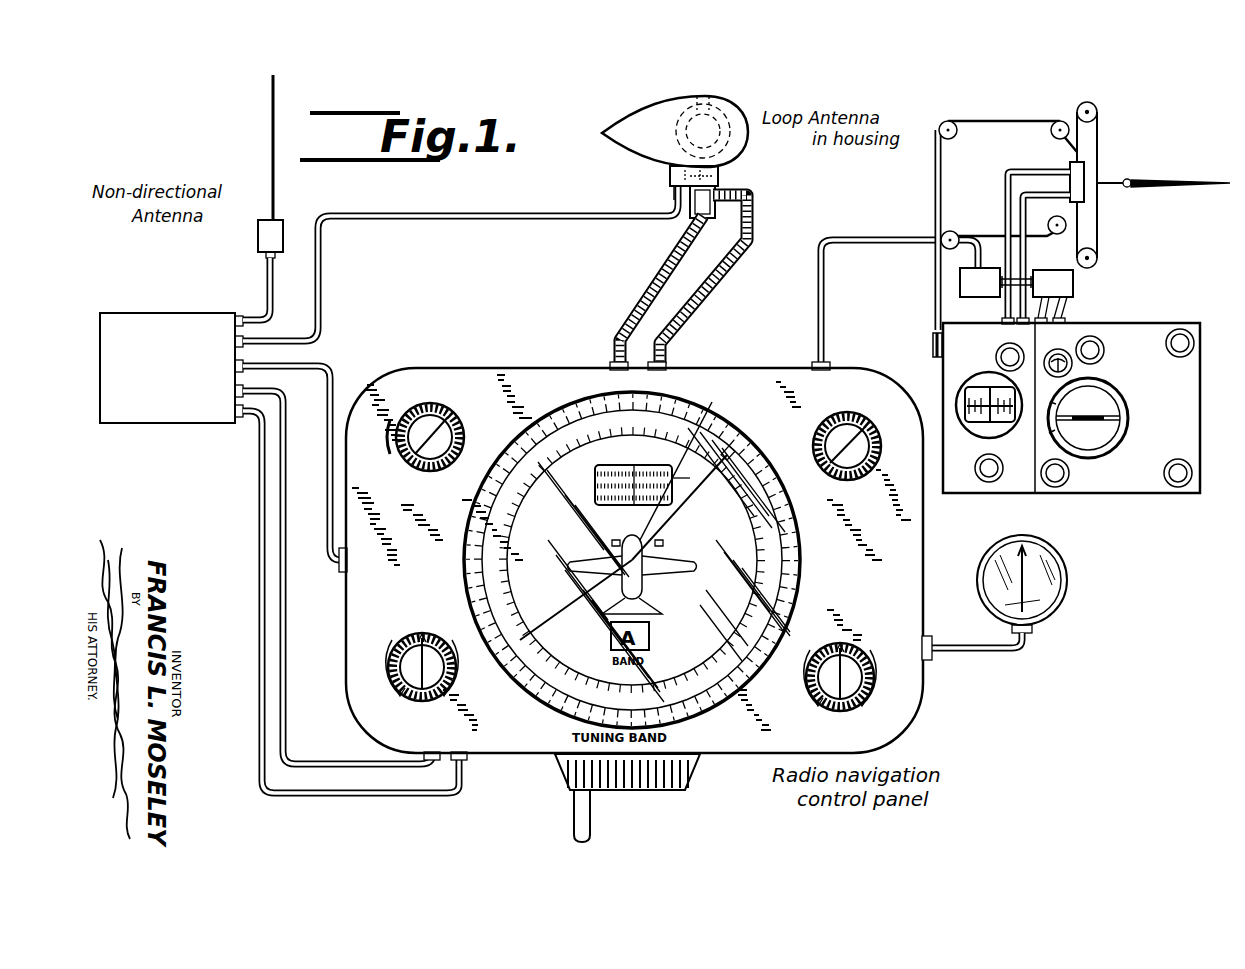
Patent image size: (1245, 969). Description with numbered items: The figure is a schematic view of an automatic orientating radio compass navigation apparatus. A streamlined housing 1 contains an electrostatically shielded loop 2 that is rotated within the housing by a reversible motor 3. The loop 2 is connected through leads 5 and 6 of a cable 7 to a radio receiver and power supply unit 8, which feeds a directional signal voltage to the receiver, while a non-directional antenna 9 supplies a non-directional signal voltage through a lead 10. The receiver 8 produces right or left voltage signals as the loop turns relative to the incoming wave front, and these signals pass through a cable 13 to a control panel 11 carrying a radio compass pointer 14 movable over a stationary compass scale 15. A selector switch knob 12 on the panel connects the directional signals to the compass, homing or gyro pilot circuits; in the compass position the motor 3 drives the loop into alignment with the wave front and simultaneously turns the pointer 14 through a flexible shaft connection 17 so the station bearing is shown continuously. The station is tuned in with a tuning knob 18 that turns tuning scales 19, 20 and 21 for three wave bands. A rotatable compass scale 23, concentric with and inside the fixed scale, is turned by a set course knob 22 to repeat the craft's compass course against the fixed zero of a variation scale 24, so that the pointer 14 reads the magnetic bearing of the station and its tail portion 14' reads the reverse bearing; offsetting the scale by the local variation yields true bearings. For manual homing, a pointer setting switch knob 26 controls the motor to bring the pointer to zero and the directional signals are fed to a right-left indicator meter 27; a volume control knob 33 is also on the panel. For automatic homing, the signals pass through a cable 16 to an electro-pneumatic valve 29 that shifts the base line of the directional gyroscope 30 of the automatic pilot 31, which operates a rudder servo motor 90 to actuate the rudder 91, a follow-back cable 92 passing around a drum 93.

The streamlined housing 1 is at (616, 123).
The electrostatically shielded loop 2 is at (698, 103).
The motor 3 is at (690, 222).
The lead 5 is at (668, 172).
The lead 6 is at (672, 189).
The cable 7 is at (497, 222).
The radio receiver and power supply unit 8 is at (163, 313).
The non-directional antenna 9 is at (268, 150).
The lead 10 is at (275, 282).
The control panel 11 is at (487, 367).
The selector switch knob 12 is at (842, 414).
The cable 13 is at (338, 378).
The radio compass pointer 14 is at (651, 530).
The tail portion of pointer 14' is at (576, 600).
The compass scale 15 is at (716, 404).
The cable 16 is at (818, 290).
The flexible shaft connection 17 is at (655, 297).
The tuning knob 18 is at (592, 822).
The tuning scale 19 is at (594, 483).
The tuning scale 20 is at (692, 490).
The tuning scale 21 is at (597, 505).
The set course knob 22 is at (410, 643).
The rotatable compass scale 23 is at (742, 622).
The variation scale 24 is at (630, 552).
The pointer setting switch knob 26 is at (855, 642).
The right-left indicator meter 27 is at (1068, 583).
The electro-pneumatic valve 29 is at (970, 296).
The directional gyroscope 30 is at (965, 402).
The automatic pilot 31 is at (1020, 493).
The volume control knob 33 is at (440, 420).
The rudder servo motor 90 is at (1070, 168).
The rudder 91 is at (1143, 182).
The cable 92 is at (936, 178).
The drum 93 is at (932, 344).